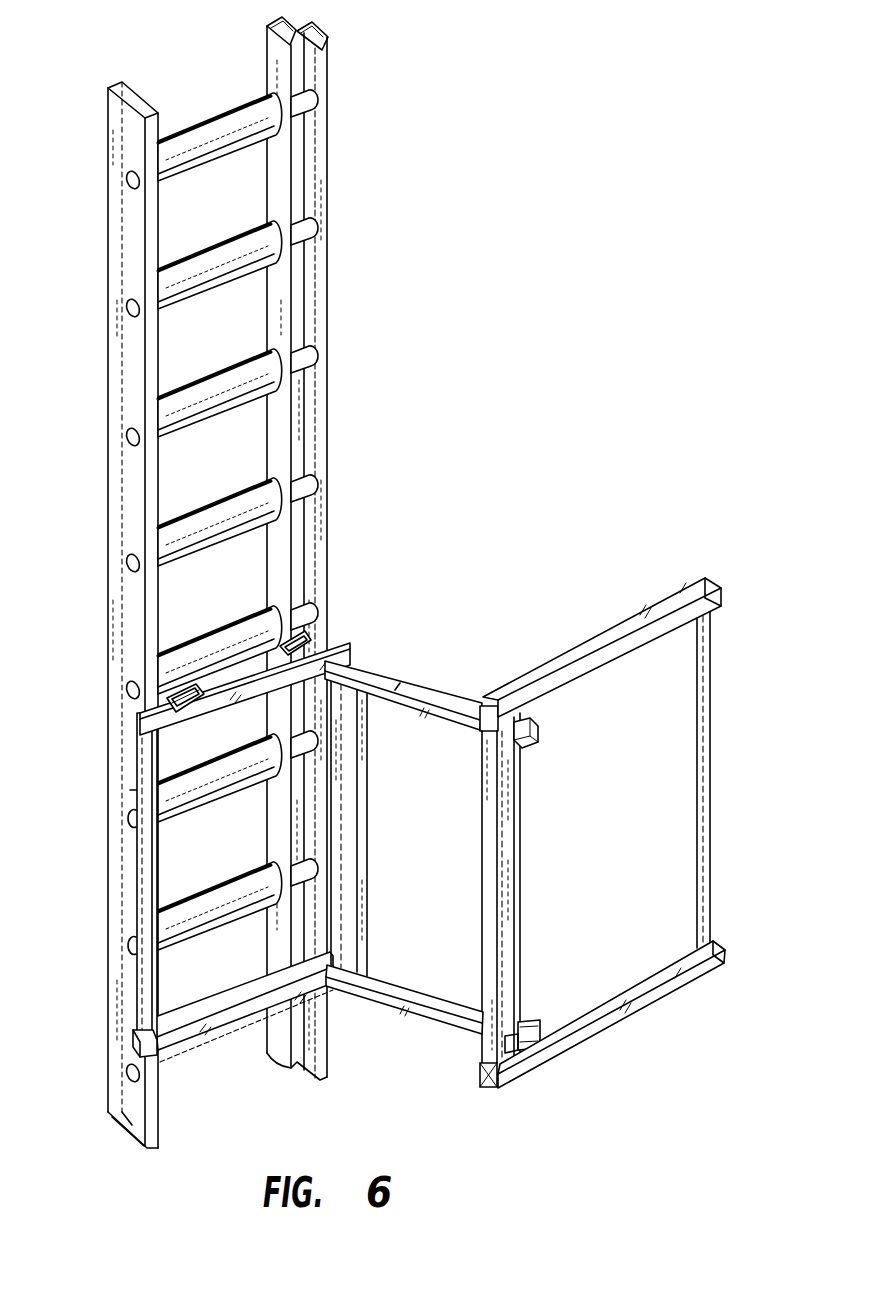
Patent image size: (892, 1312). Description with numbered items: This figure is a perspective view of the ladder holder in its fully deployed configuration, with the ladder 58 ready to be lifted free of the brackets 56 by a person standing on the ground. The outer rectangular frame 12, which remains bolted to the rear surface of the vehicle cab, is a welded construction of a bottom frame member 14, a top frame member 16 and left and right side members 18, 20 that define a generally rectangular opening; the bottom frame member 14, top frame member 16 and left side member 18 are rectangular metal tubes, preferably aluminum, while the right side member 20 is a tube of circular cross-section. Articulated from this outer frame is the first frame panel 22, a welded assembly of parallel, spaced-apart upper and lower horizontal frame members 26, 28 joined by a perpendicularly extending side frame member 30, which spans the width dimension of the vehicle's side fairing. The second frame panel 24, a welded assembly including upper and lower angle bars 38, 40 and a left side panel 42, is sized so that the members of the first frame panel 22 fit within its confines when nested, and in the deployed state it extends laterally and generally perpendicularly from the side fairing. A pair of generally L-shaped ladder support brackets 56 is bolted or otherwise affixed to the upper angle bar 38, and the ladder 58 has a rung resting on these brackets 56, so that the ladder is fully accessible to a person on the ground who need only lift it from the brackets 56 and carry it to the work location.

The outer rectangular frame 12 is at (540, 824).
The bottom frame member 14 is at (633, 1007).
The top frame member 16 is at (628, 622).
The left side member 18 is at (507, 863).
The right side member 20 is at (708, 770).
The first frame panel 22 is at (440, 694).
The second frame panel 24 is at (125, 792).
The upper horizontal frame member 26 is at (378, 670).
The lower horizontal frame member 28 is at (400, 998).
The side frame member 30 is at (365, 798).
The upper angle bar 38 is at (340, 630).
The lower angle bar 40 is at (230, 993).
The left side panel 42 is at (147, 897).
The ladder support brackets 56 is at (200, 690).
The ladder 58 is at (328, 250).